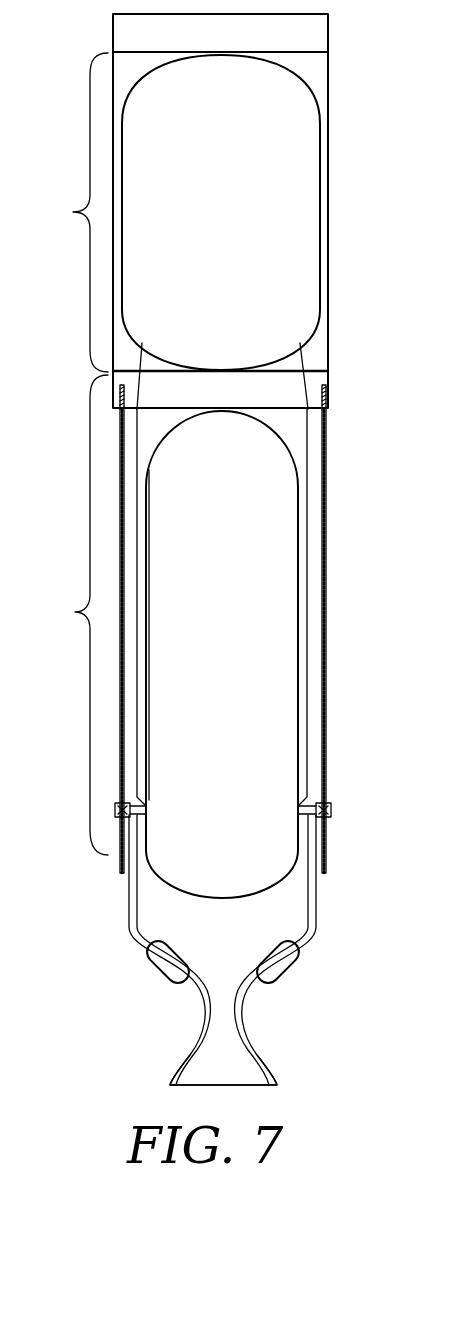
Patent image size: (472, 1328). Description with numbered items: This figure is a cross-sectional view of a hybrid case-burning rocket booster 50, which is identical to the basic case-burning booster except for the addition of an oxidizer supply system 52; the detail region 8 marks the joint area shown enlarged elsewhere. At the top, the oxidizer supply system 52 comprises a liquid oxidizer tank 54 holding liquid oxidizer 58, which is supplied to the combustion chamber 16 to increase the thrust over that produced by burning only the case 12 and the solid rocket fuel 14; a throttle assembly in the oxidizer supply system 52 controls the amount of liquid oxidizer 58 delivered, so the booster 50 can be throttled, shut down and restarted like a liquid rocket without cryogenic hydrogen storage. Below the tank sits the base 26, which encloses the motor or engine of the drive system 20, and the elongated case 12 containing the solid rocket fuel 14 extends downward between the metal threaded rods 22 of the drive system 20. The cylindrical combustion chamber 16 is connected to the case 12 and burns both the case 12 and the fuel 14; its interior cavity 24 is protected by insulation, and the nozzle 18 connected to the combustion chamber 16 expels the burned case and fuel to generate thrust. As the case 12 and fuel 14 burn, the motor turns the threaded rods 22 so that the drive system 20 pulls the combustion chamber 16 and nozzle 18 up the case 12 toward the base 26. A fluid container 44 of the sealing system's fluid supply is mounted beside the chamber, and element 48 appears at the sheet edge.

The hybrid case-burning rocket booster 50 is at (379, 120).
The oxidizer supply system 52 is at (77, 212).
The liquid oxidizer 58 is at (232, 233).
The liquid oxidizer tank 54 is at (320, 230).
The base 26 is at (329, 381).
The drive system 20 is at (78, 615).
The threaded rods 22 is at (326, 613).
The case 12 is at (300, 511).
The solid rocket fuel 14 is at (250, 683).
The detail region (FIG. 8) 8 is at (338, 885).
The combustion chamber 16 is at (113, 902).
The cavity 24 is at (240, 938).
The fluid container 44 is at (170, 977).
The nozzle 18 is at (273, 1054).
The element 48 is at (465, 644).